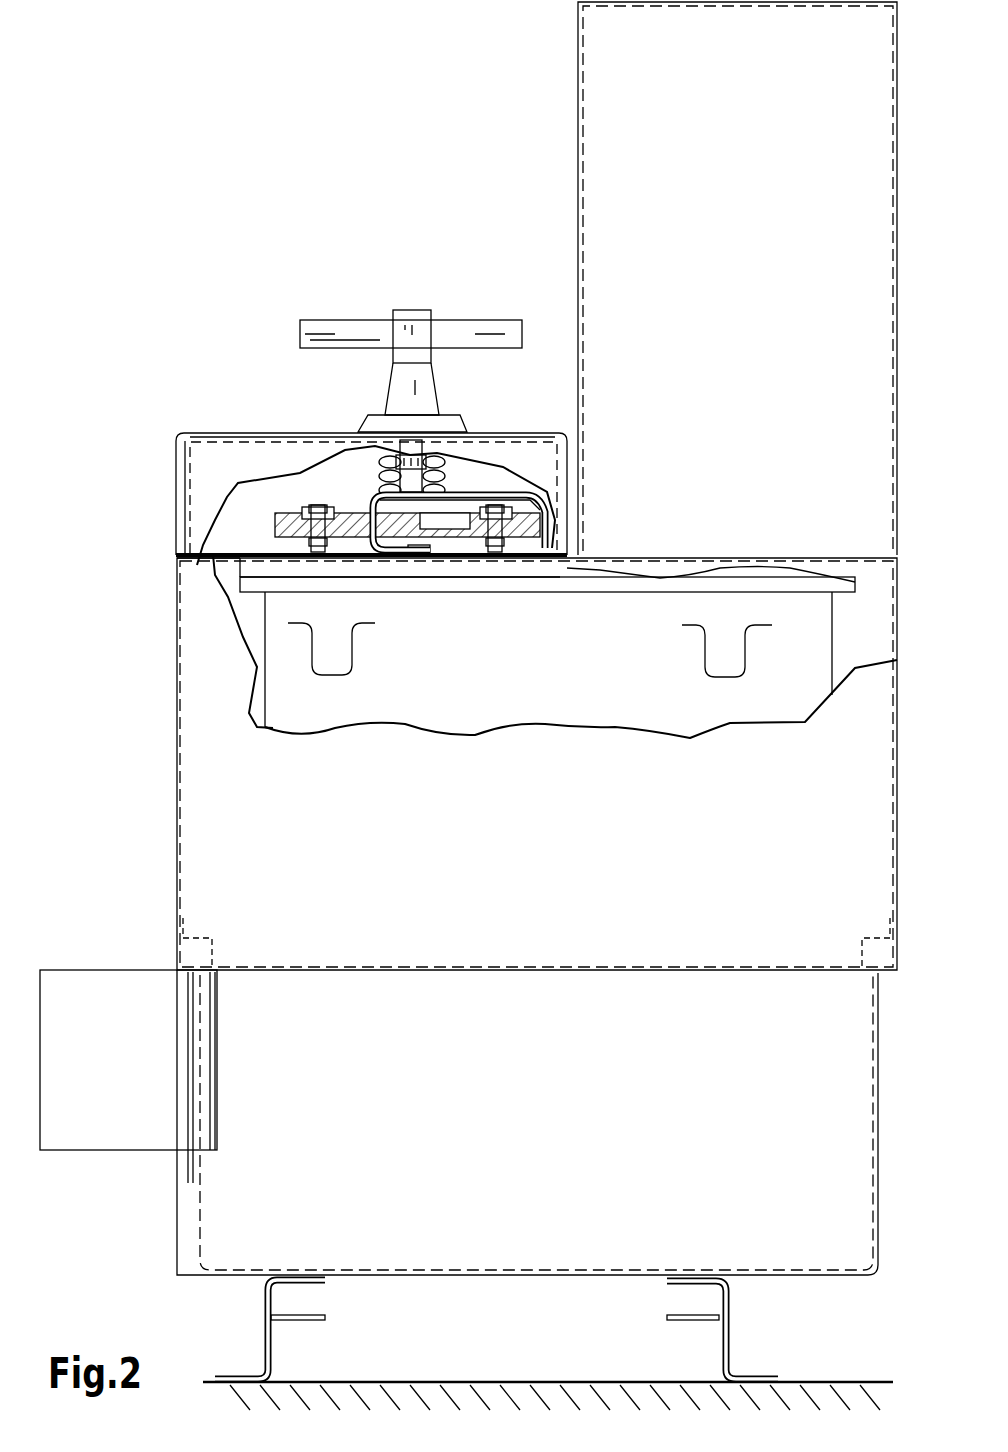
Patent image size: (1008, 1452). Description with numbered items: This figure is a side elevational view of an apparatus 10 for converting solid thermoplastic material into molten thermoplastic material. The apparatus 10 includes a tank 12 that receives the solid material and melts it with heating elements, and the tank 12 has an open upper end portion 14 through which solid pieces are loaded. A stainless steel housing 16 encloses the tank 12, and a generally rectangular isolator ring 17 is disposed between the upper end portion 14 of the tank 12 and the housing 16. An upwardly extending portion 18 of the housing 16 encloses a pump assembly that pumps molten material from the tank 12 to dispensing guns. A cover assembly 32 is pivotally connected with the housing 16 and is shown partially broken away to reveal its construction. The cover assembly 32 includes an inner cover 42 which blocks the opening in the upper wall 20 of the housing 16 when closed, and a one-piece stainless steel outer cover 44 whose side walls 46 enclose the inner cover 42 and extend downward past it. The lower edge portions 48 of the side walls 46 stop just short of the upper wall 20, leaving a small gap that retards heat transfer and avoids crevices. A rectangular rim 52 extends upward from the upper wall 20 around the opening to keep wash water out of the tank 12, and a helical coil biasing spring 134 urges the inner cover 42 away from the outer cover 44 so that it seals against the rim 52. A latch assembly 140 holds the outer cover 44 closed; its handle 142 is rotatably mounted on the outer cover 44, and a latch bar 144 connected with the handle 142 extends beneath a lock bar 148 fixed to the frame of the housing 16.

The apparatus 10 is at (130, 1226).
The tank 12 is at (252, 677).
The open upper end portion 14 is at (258, 588).
The housing 16 is at (168, 886).
The isolator ring 17 is at (328, 565).
The upwardly extending portion 18 is at (616, 93).
The upper wall 20 is at (180, 583).
The cover assembly 32 is at (216, 426).
The inner cover 42 is at (455, 547).
The outer cover 44 is at (309, 429).
The side walls 46 is at (274, 458).
The lower edge portions 48 is at (212, 553).
The rim 52 is at (510, 547).
The biasing spring 134 is at (446, 482).
The latch assembly 140 is at (411, 332).
The handle 142 is at (360, 328).
The latch bar 144 is at (422, 508).
The lock bar 148 is at (365, 547).